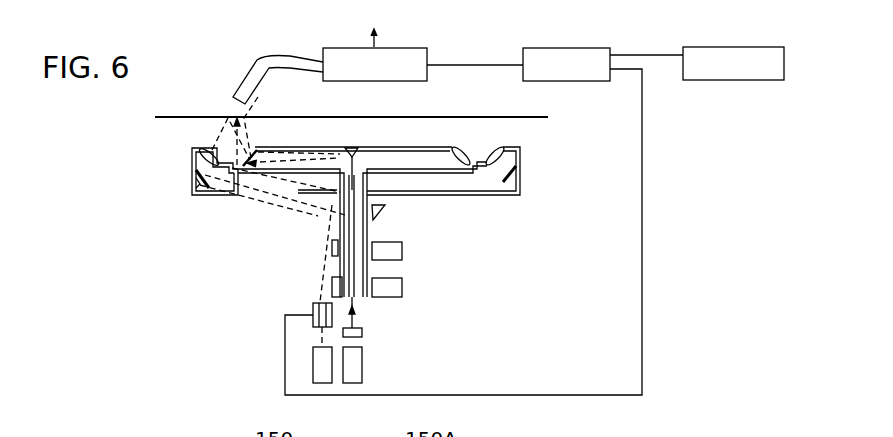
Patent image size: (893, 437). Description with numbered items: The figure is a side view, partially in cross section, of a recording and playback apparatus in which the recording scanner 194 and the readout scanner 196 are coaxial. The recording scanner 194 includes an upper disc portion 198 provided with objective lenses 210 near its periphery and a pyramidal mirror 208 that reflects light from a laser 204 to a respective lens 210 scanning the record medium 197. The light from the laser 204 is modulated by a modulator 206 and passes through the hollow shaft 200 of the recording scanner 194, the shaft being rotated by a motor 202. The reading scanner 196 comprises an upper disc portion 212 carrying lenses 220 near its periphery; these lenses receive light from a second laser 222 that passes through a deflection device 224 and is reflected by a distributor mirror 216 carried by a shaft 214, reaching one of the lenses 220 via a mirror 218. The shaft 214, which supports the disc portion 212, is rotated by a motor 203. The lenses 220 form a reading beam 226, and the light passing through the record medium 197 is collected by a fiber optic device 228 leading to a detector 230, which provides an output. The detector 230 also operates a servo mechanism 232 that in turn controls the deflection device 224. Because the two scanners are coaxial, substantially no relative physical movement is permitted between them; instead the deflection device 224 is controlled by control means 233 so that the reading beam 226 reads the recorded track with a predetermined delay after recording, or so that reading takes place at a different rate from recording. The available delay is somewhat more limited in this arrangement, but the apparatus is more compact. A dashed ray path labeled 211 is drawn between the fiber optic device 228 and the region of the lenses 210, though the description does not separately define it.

The recording scanner 194 is at (472, 142).
The readout scanner 196 is at (525, 177).
The record medium 197 is at (168, 116).
The upper disc portion 198 is at (404, 149).
The hollow shaft 200 is at (366, 223).
The motor 202 is at (402, 286).
The motor 203 is at (402, 250).
The laser 204 is at (362, 372).
The modulator 206 is at (362, 333).
The pyramidal mirror 208 is at (361, 143).
The objective lenses 210 is at (258, 148).
The reflected beam 211 is at (257, 112).
The upper disc portion 212 is at (192, 170).
The shaft 214 is at (340, 228).
The distributor mirror 216 is at (338, 212).
The mirror 218 is at (195, 184).
The lenses 220 is at (214, 147).
The laser 222 is at (313, 368).
The deflection device 224 is at (313, 306).
The reading beam 226 is at (226, 117).
The fiber optic device 228 is at (252, 58).
The detector 230 is at (421, 48).
The servo mechanism 232 is at (565, 47).
The control means 233 is at (734, 47).